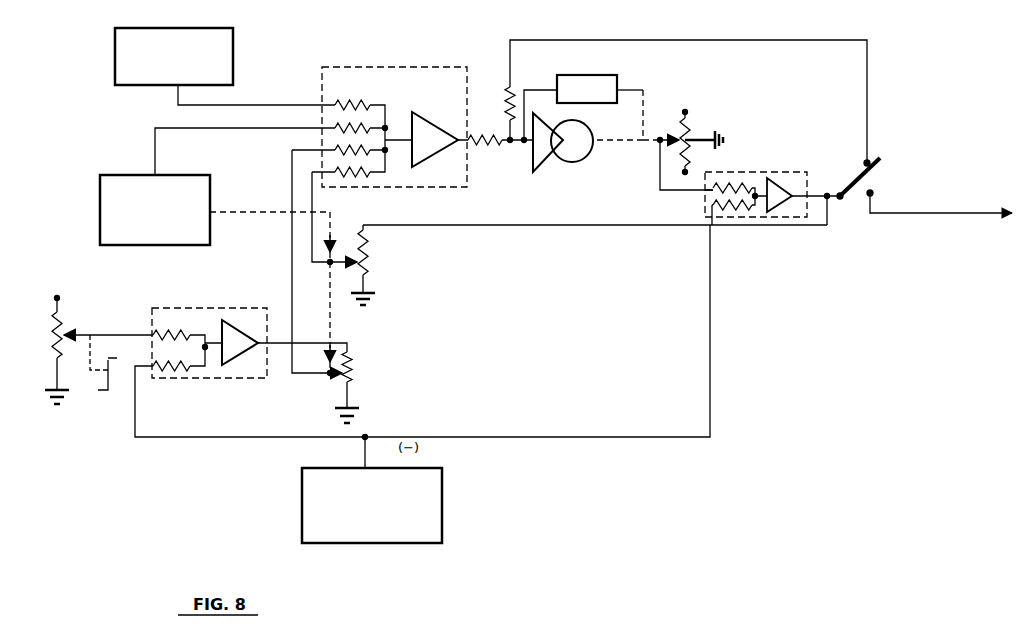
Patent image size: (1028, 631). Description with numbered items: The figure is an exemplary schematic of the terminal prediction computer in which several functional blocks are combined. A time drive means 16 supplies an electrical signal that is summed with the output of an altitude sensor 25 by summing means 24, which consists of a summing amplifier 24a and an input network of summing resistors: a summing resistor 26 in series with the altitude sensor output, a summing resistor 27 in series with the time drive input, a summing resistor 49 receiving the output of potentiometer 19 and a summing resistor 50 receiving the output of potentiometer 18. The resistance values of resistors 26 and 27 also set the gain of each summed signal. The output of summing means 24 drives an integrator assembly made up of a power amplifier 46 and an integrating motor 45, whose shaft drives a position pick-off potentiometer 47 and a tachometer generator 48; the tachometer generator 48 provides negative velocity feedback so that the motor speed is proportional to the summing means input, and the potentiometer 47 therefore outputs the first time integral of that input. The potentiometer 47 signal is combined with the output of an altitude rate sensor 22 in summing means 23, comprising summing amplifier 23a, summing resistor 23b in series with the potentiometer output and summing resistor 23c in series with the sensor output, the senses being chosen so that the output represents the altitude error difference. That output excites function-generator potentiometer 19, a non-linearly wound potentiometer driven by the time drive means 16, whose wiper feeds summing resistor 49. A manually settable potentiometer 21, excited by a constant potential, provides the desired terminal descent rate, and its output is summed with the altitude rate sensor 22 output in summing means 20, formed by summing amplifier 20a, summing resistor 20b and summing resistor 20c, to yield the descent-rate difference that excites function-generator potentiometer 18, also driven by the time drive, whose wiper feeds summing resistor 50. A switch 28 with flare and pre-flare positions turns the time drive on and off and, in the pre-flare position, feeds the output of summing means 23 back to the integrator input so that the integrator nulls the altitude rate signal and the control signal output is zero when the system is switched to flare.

The time drive means 16 is at (138, 180).
The potentiometer 18 is at (357, 368).
The potentiometer 19 is at (373, 258).
The summing means 20 is at (185, 311).
The summing amplifier 20a is at (256, 350).
The summing resistor 20b is at (172, 326).
The summing resistor 20c is at (166, 370).
The manually settable potentiometer 21 is at (70, 330).
The altitude rate sensor 22 is at (424, 508).
The summing means 23 is at (798, 172).
The summing amplifier 23a is at (790, 198).
The summing resistor 23b is at (732, 186).
The summing resistor 23c is at (730, 210).
The summing means 24 is at (418, 62).
The summing amplifier 24a is at (432, 121).
The altitude sensor 25 is at (226, 74).
The summing resistor 26 is at (342, 104).
The summing resistor 27 is at (360, 127).
The switch 28 is at (893, 167).
The integrating motor 45 is at (580, 146).
The power amplifier 46 is at (540, 146).
The position pick-off potentiometer 47 is at (690, 135).
The tachometer generator 48 is at (612, 84).
The summing resistor 49 is at (346, 178).
The summing resistor 50 is at (340, 150).